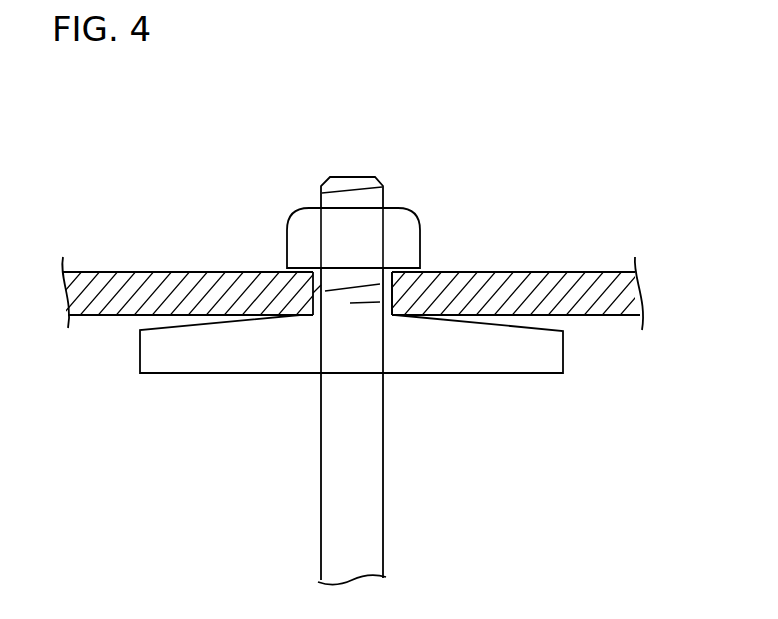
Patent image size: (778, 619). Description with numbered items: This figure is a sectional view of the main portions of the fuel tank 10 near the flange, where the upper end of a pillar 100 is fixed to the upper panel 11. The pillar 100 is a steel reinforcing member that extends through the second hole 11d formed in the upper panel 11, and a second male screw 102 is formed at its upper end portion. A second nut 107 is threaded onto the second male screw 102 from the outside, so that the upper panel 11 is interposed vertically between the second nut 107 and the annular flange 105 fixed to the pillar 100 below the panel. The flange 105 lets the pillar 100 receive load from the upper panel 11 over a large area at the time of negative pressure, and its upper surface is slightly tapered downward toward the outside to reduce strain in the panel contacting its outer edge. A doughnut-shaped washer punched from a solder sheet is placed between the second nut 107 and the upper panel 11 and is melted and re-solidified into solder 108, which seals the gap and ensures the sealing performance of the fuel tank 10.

The fuel tank 10 is at (176, 177).
The upper panel 11 is at (100, 283).
The second hole 11d is at (392, 270).
The pillar 100 is at (378, 490).
The second male screw 102 is at (380, 206).
The flange 105 is at (527, 360).
The second nut 107 is at (302, 245).
The solder 108 is at (289, 270).